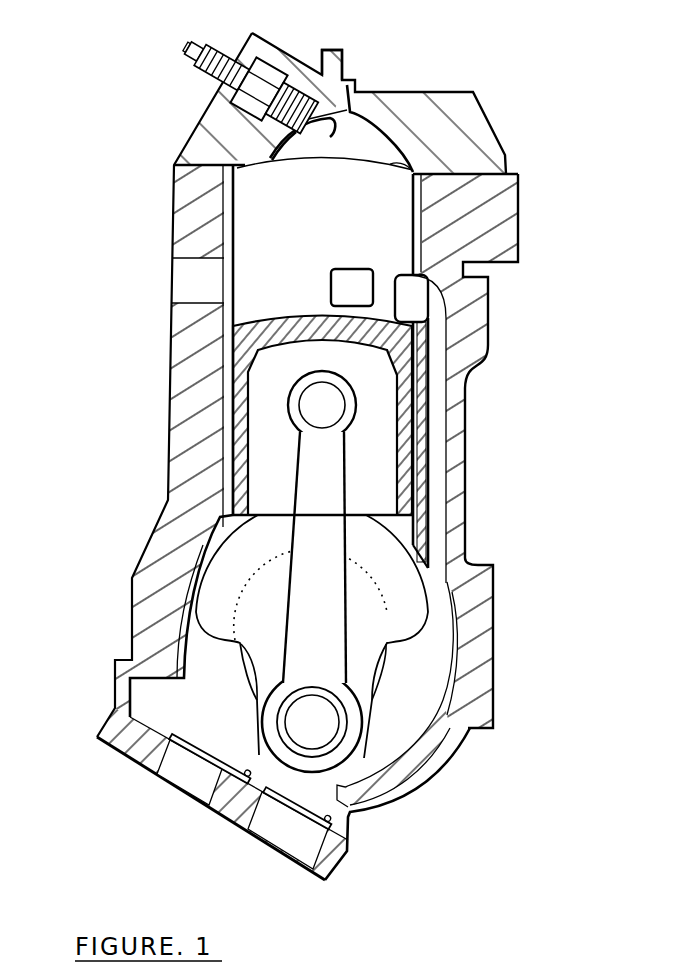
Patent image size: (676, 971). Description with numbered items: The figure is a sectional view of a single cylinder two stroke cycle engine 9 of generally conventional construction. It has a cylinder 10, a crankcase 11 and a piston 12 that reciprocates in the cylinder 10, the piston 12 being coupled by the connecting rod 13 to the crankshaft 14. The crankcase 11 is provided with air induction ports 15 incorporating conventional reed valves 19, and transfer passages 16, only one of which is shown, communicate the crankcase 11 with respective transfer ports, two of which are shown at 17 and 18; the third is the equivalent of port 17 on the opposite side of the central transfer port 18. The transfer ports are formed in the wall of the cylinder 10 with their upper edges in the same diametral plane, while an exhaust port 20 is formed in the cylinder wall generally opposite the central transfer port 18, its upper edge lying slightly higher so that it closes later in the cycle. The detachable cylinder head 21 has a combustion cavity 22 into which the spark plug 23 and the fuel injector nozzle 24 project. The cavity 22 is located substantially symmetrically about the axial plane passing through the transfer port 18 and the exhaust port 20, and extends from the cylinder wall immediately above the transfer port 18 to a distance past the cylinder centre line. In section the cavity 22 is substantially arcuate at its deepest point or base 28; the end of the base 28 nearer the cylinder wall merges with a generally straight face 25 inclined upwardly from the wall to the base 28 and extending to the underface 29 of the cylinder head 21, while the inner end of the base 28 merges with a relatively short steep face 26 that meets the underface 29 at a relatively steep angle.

The engine 9 is at (110, 402).
The cylinder 10 is at (271, 285).
The crankcase 11 is at (170, 655).
The piston 12 is at (170, 483).
The connecting rod 13 is at (326, 614).
The crankshaft 14 is at (321, 746).
The air induction ports 15 is at (186, 772).
The transfer passages 16 is at (437, 525).
The transfer port 17 is at (340, 287).
The central transfer port 18 is at (430, 307).
The reed valves 19 is at (205, 754).
The exhaust port 20 is at (197, 278).
The cylinder head 21 is at (495, 137).
The combustion cavity 22 is at (373, 135).
The spark plug 23 is at (205, 58).
The fuel injector nozzle 24 is at (332, 58).
The straight face 25 is at (402, 170).
The steep face 26 is at (291, 156).
The arcuate base 28 is at (218, 129).
The underface 29 is at (361, 172).